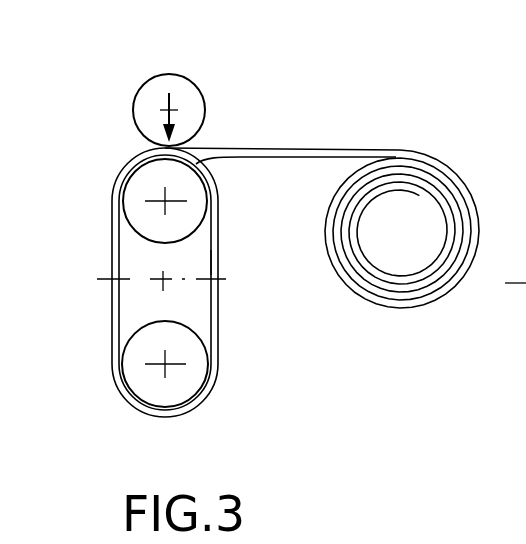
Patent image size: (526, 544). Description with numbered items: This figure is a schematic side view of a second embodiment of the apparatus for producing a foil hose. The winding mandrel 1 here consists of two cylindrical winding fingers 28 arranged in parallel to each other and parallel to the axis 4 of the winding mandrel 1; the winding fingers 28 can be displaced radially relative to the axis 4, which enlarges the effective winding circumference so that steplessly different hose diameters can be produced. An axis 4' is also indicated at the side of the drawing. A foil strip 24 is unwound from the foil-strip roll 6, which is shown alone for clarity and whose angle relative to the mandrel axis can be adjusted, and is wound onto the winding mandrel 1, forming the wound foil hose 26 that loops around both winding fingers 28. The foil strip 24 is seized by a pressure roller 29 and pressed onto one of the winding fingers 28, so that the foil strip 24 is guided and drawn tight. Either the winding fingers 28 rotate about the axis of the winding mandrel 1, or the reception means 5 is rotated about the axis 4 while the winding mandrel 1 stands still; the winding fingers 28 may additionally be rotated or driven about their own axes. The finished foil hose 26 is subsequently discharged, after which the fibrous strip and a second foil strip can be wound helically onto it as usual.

The winding mandrel 1 is at (151, 286).
The axis 4 is at (183, 309).
The axis 4' is at (510, 313).
The reception means 5 is at (401, 116).
The foil-strip roll 6 is at (465, 185).
The foil strip 24 is at (333, 148).
The foil hose 26 is at (213, 262).
The winding fingers 28 is at (143, 182).
The pressure roller 29 is at (199, 111).